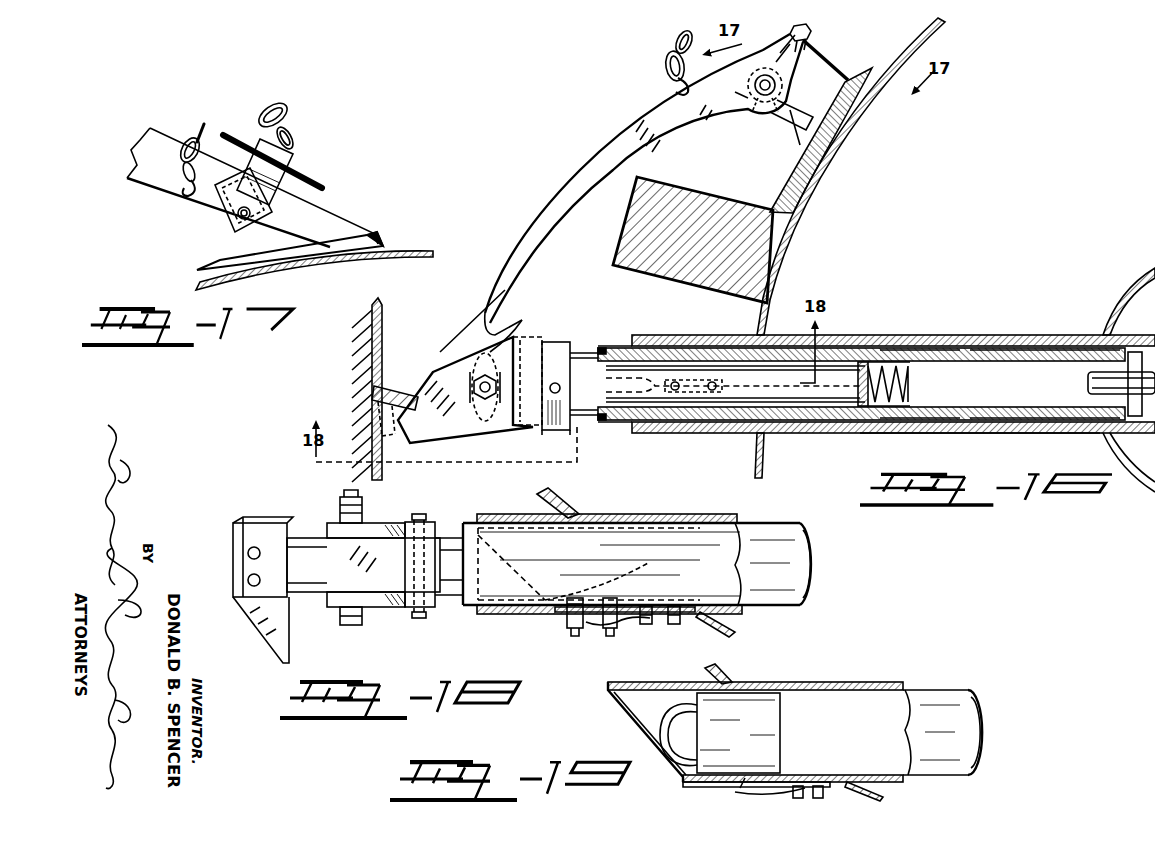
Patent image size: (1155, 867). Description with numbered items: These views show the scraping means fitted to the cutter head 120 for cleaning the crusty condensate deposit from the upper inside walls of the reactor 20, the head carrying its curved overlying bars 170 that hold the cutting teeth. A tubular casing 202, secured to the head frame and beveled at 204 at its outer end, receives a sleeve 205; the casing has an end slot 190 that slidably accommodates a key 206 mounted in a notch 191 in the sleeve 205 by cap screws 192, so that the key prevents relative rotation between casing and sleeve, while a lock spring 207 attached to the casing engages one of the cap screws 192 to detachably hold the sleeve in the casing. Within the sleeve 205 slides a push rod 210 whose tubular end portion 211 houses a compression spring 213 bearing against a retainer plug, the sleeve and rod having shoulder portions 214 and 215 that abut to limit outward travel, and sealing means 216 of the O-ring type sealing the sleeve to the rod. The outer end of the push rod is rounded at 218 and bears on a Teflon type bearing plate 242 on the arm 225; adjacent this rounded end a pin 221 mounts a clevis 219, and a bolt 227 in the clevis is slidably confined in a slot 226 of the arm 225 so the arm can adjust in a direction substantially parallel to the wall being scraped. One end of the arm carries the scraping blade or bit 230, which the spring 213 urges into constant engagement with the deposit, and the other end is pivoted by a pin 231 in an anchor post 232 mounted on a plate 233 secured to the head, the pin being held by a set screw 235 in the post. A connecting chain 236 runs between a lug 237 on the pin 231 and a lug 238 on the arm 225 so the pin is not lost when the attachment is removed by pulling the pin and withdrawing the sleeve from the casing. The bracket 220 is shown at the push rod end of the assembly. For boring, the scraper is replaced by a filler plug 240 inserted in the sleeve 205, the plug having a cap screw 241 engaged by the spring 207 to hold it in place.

In FIG. 16, the reactor 20 is at (372, 320).
In FIG. 16, the cutter head 120 is at (816, 178).
In FIG. 17, the cutter head 120 is at (416, 251).
In FIG. 18, the cutter head 120 is at (566, 506).
In FIG. 19, the cutter head 120 is at (718, 677).
In FIG. 16, the curved overlying bars 170 is at (626, 229).
In FIG. 16, the end slot 190 is at (630, 378).
In FIG. 18, the end slot 190 is at (556, 613).
In FIG. 19, the end slot 190 is at (690, 783).
In FIG. 18, the notch 191 is at (653, 572).
In FIG. 18, the cap screws 192 is at (607, 631).
In FIG. 16, the tubular casings 202 is at (1065, 335).
In FIG. 18, the tubular casings 202 is at (808, 590).
In FIG. 19, the tubular casings 202 is at (968, 691).
In FIG. 18, the beveled end 204 is at (530, 602).
In FIG. 19, the beveled end 204 is at (620, 716).
In FIG. 16, the sleeve 205 is at (1012, 335).
In FIG. 18, the sleeve 205 is at (470, 526).
In FIG. 16, the key 206 is at (717, 384).
In FIG. 18, the key 206 is at (573, 630).
In FIG. 18, the lock spring 207 is at (620, 620).
In FIG. 19, the lock spring 207 is at (760, 791).
In FIG. 16, the push rod 210 is at (850, 349).
In FIG. 16, the tubular end portion 211 is at (972, 349).
In FIG. 16, the compression spring 213 is at (920, 349).
In FIG. 16, the shoulder portion 214 is at (870, 433).
In FIG. 16, the shoulder portion 215 is at (866, 362).
In FIG. 16, the sealing means 216 is at (604, 349).
In FIG. 16, the rounded end 218 is at (540, 340).
In FIG. 16, the clevis 219 is at (566, 342).
In FIG. 18, the clevis 219 is at (393, 523).
In FIG. 16, the bracket arm 220 is at (503, 427).
In FIG. 18, the bracket arm 220 is at (334, 540).
In FIG. 16, the pin 221 is at (560, 432).
In FIG. 18, the pin 221 is at (420, 514).
In FIG. 16, the arm 225 is at (545, 210).
In FIG. 17, the arm 225 is at (140, 150).
In FIG. 16, the slot 226 is at (497, 284).
In FIG. 16, the bolt 227 is at (470, 378).
In FIG. 18, the bolt 227 is at (351, 625).
In FIG. 16, the scraping blade or bit 230 is at (372, 386).
In FIG. 18, the scraping blade or bit 230 is at (262, 600).
In FIG. 16, the pin 231 is at (758, 103).
In FIG. 17, the pin 231 is at (298, 190).
In FIG. 16, the anchor post 232 is at (808, 58).
In FIG. 17, the anchor post 232 is at (214, 268).
In FIG. 16, the plate 233 is at (866, 96).
In FIG. 16, the set screw 235 is at (810, 31).
In FIG. 17, the set screw 235 is at (224, 235).
In FIG. 16, the connecting chain 236 is at (667, 44).
In FIG. 17, the connecting chain 236 is at (292, 88).
In FIG. 17, the lug 237 is at (290, 146).
In FIG. 16, the lug 238 is at (680, 84).
In FIG. 17, the lug 238 is at (184, 197).
In FIG. 19, the filler plug 240 is at (765, 684).
In FIG. 19, the cap screw 241 is at (775, 756).
In FIG. 16, the bearing plate 242 is at (493, 373).